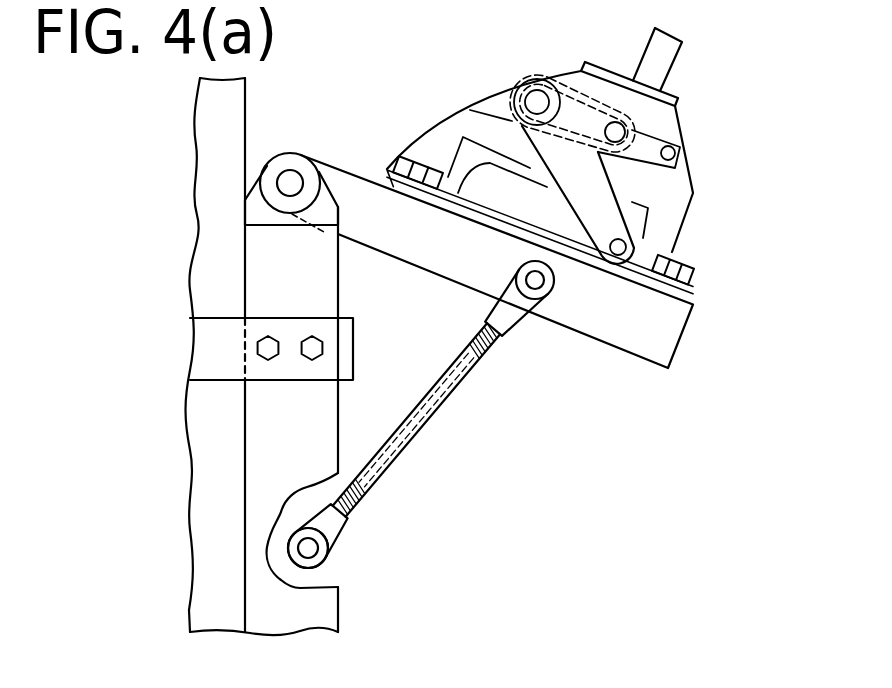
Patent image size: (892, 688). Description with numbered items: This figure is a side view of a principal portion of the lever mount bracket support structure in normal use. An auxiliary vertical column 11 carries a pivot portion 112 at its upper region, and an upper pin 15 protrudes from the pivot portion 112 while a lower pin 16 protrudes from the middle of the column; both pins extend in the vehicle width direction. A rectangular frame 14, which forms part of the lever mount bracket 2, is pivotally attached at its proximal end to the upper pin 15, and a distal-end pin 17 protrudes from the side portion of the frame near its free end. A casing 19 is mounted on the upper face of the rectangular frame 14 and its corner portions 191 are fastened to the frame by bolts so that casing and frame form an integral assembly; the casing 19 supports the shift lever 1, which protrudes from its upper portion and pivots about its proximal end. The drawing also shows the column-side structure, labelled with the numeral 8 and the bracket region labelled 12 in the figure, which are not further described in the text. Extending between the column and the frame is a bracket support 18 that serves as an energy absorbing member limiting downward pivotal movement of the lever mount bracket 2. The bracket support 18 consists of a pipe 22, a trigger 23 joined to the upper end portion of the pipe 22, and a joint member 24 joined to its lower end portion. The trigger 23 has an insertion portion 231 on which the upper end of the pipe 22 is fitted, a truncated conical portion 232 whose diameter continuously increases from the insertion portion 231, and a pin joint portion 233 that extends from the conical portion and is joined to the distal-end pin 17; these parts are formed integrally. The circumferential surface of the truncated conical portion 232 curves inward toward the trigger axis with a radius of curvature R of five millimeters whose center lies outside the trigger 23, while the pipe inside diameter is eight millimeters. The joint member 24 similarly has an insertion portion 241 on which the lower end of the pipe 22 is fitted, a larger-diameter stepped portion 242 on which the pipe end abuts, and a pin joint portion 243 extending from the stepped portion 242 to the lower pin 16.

The shift lever 1 is at (696, 63).
The lever mount bracket 2 is at (669, 383).
The frame member 8 is at (197, 479).
The auxiliary vertical column 11 is at (338, 396).
The pivot portion 112 is at (253, 214).
The mounting bracket 12 is at (207, 325).
The rectangular frame 14 is at (668, 331).
The upper pin 15 is at (290, 171).
The lower pin 16 is at (306, 540).
The distal-end pin 17 is at (541, 285).
The bracket support 18 is at (456, 451).
The casing 19 is at (702, 212).
The corner portion 191 is at (393, 165).
The pipe 22 is at (441, 404).
The trigger 23 is at (540, 327).
The insertion portion 231 is at (477, 347).
The truncated conical portion 232 is at (487, 320).
The pin joint portion 233 is at (530, 266).
The joint member 24 is at (347, 549).
The insertion portion 241 is at (364, 490).
The stepped portion 242 is at (344, 516).
The pin joint portion 243 is at (328, 565).
The radius of curvature R is at (509, 343).